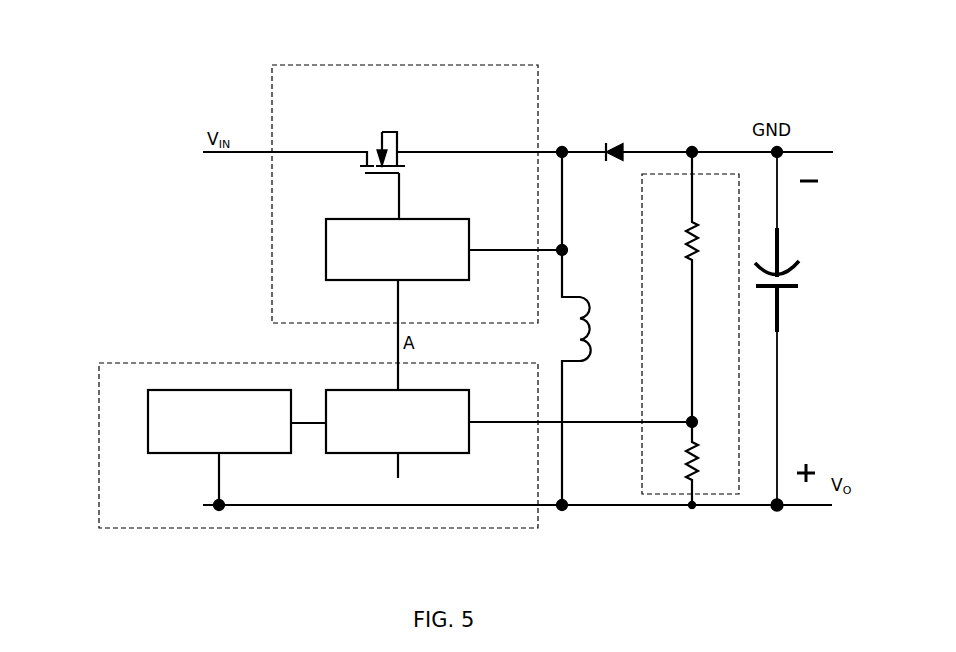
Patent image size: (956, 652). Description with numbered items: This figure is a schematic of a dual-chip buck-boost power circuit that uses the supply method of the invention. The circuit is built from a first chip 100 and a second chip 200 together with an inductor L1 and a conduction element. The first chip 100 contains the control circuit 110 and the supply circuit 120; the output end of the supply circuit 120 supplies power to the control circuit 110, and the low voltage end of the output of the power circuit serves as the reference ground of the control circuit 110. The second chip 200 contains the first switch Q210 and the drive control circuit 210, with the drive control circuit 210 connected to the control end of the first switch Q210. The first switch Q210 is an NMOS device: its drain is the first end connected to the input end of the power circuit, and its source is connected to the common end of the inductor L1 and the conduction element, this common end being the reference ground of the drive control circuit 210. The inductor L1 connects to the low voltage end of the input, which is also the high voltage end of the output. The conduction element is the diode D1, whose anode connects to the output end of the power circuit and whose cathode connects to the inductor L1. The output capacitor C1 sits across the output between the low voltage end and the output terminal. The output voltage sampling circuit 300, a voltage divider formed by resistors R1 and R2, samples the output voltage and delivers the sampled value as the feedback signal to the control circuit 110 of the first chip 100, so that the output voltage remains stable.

The first chip 100 is at (118, 362).
The control circuit 110 is at (509, 435).
The supply circuit 120 is at (236, 447).
The second chip 200 is at (327, 63).
The drive control circuit 210 is at (444, 249).
The output voltage sampling circuit 300 is at (663, 494).
The first switch Q210 is at (347, 175).
The diode D1 is at (610, 137).
The inductor L1 is at (591, 328).
The first resistor R1 is at (674, 287).
The second resistor R2 is at (676, 463).
The output capacitor C1 is at (788, 328).